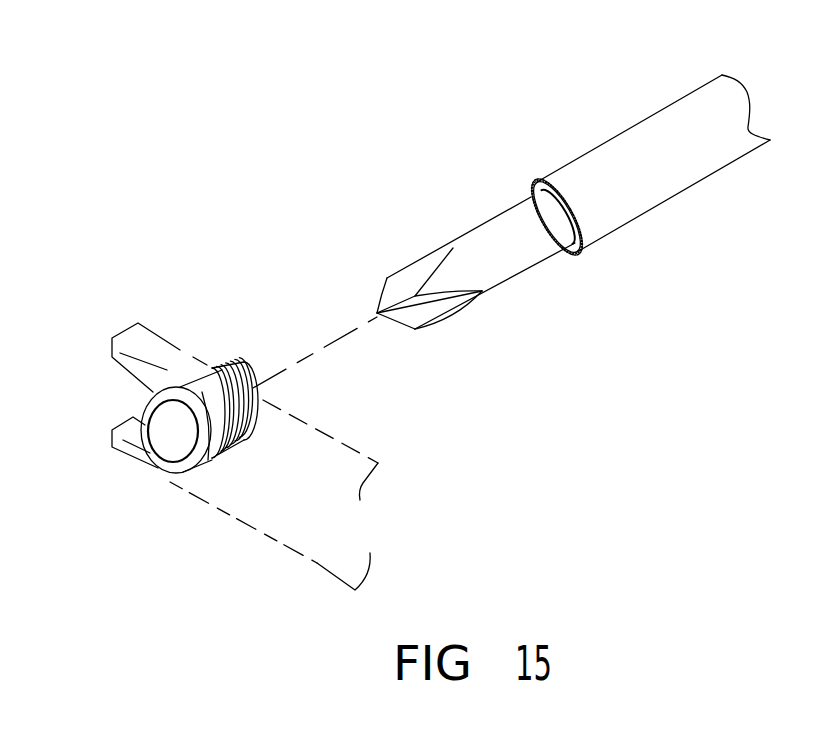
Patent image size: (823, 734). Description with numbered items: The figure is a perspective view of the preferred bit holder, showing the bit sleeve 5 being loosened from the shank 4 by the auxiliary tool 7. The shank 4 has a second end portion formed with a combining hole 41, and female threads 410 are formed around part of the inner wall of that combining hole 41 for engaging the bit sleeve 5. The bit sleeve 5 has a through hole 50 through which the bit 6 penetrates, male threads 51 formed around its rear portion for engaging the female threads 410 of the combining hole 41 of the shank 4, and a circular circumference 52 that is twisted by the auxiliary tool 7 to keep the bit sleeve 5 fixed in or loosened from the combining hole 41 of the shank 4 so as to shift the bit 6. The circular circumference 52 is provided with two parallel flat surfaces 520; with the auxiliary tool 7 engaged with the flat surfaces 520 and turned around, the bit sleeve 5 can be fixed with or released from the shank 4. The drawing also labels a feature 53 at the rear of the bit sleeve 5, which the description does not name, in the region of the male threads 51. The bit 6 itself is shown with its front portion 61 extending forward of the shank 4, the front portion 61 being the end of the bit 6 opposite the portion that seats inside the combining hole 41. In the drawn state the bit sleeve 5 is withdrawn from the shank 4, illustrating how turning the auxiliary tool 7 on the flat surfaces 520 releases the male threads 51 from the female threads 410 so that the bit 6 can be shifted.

The shank 4 is at (619, 187).
The combining hole 41 is at (571, 257).
The female threads 410 is at (527, 190).
The bit 6 is at (476, 266).
The front portion 61 is at (495, 275).
The bit sleeve 5 is at (171, 422).
The through hole 50 is at (167, 456).
The male threads 51 is at (245, 440).
The circular circumference 52 is at (205, 457).
The external thread 53 is at (243, 361).
The flat surfaces 520 is at (187, 384).
The auxiliary tool 7 is at (361, 514).